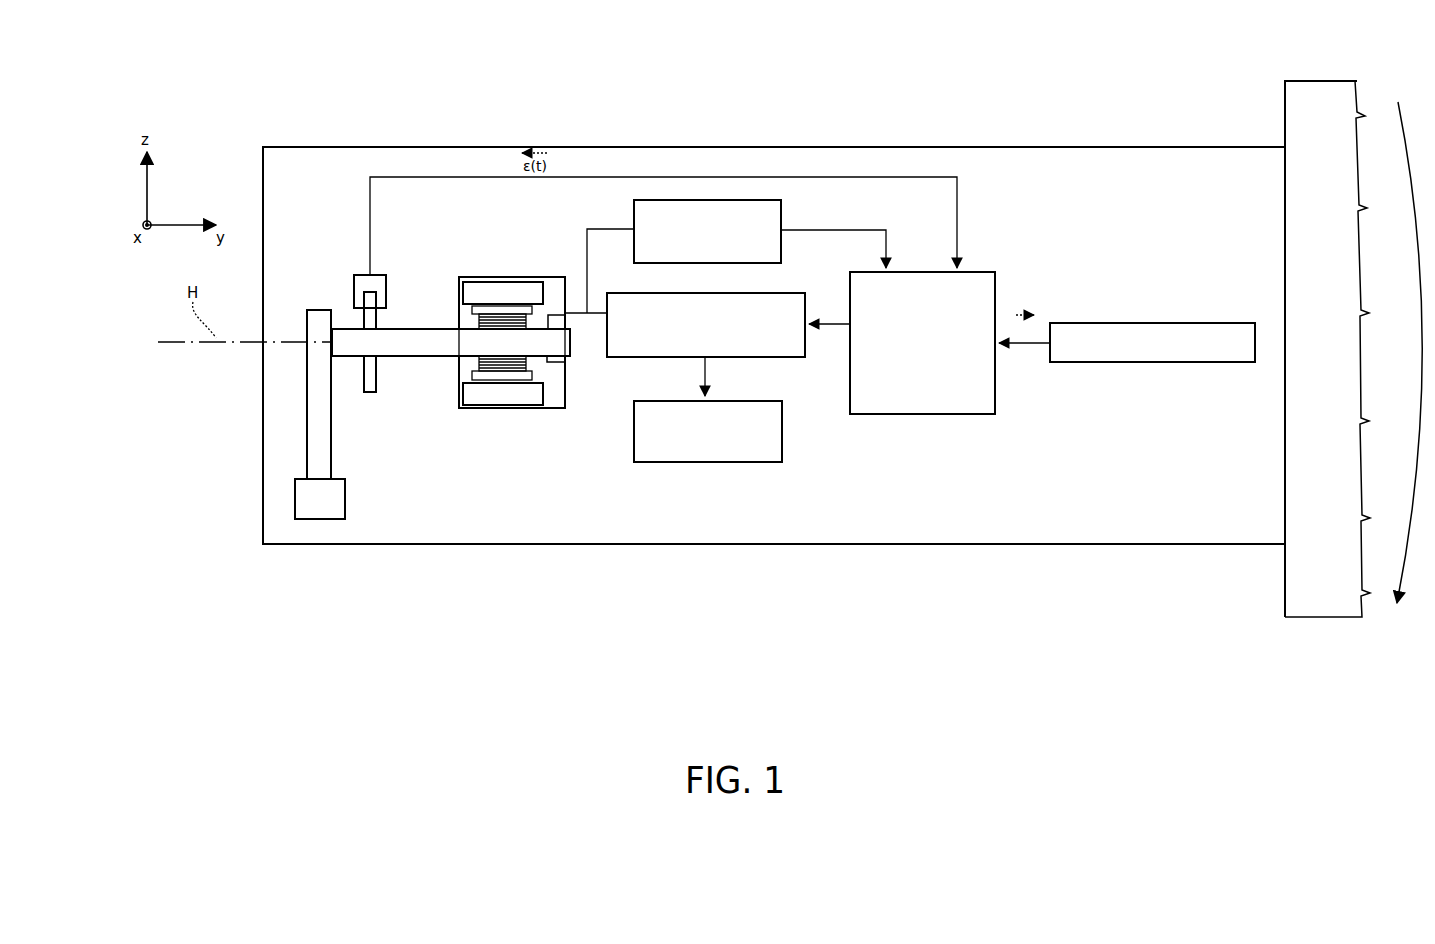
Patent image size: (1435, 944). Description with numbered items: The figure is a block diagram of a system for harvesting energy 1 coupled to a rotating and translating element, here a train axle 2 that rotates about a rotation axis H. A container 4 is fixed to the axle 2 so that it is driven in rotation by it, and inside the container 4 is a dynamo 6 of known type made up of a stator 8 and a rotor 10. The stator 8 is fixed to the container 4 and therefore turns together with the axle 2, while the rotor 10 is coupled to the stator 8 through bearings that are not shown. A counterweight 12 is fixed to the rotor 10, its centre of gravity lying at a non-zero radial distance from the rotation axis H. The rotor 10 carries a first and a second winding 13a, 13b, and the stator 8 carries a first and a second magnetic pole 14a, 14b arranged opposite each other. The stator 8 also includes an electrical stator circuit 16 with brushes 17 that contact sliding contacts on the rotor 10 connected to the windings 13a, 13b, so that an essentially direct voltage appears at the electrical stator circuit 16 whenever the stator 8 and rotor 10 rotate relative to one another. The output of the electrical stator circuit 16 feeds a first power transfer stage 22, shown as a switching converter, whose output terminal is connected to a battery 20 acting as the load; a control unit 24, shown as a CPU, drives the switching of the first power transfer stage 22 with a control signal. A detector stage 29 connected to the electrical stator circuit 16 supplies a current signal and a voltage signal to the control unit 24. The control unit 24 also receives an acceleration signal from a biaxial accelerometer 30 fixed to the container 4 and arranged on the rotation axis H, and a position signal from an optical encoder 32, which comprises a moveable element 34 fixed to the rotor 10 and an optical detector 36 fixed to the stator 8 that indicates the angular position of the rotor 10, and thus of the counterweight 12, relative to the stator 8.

The system for harvesting energy 1 is at (790, 106).
The axle 2 is at (1292, 130).
The container 4 is at (440, 146).
The dynamo 6 is at (522, 416).
The stator 8 is at (490, 270).
The rotor 10 is at (460, 315).
The counterweight 12 is at (337, 492).
The first winding 13a is at (472, 367).
The second winding 13b is at (527, 318).
The first magnetic pole 14a is at (526, 396).
The second magnetic pole 14b is at (478, 290).
The electrical stator circuit 16 is at (557, 297).
The brushes 17 is at (567, 325).
The battery 20 is at (770, 458).
The first power transfer stage 22 is at (793, 355).
The control unit 24 is at (978, 417).
The detector stage 29 is at (783, 256).
The accelerometer 30 is at (1244, 322).
The optical encoder 32 is at (360, 270).
The moveable element 34 is at (375, 393).
The optical detector 36 is at (353, 290).